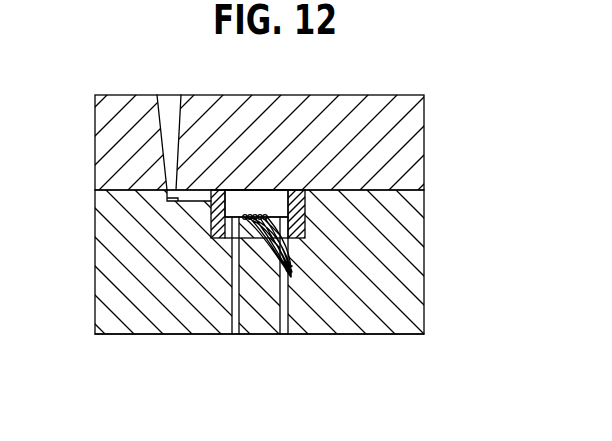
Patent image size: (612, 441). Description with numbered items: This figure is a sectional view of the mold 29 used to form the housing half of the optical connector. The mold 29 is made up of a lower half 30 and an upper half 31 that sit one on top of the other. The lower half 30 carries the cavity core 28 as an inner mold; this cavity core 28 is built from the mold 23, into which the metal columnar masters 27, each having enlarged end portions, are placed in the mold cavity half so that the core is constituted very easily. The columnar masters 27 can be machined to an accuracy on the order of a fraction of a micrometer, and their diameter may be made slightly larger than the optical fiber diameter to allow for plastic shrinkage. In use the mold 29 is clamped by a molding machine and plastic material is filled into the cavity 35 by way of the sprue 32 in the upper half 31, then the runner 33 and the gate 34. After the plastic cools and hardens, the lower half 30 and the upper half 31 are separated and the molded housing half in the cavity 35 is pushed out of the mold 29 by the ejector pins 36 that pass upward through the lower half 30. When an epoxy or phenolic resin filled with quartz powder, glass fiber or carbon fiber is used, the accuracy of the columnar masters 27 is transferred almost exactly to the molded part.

The mold 23 is at (211, 236).
The columnar master 27 is at (286, 263).
The cavity core 28 is at (305, 226).
The mold 29 is at (428, 208).
The lower half 30 is at (377, 330).
The upper half 31 is at (413, 119).
The sprue 32 is at (168, 128).
The runner 33 is at (168, 200).
The gate 34 is at (219, 197).
The cavity 35 is at (268, 207).
The ejector pins 36 is at (287, 336).